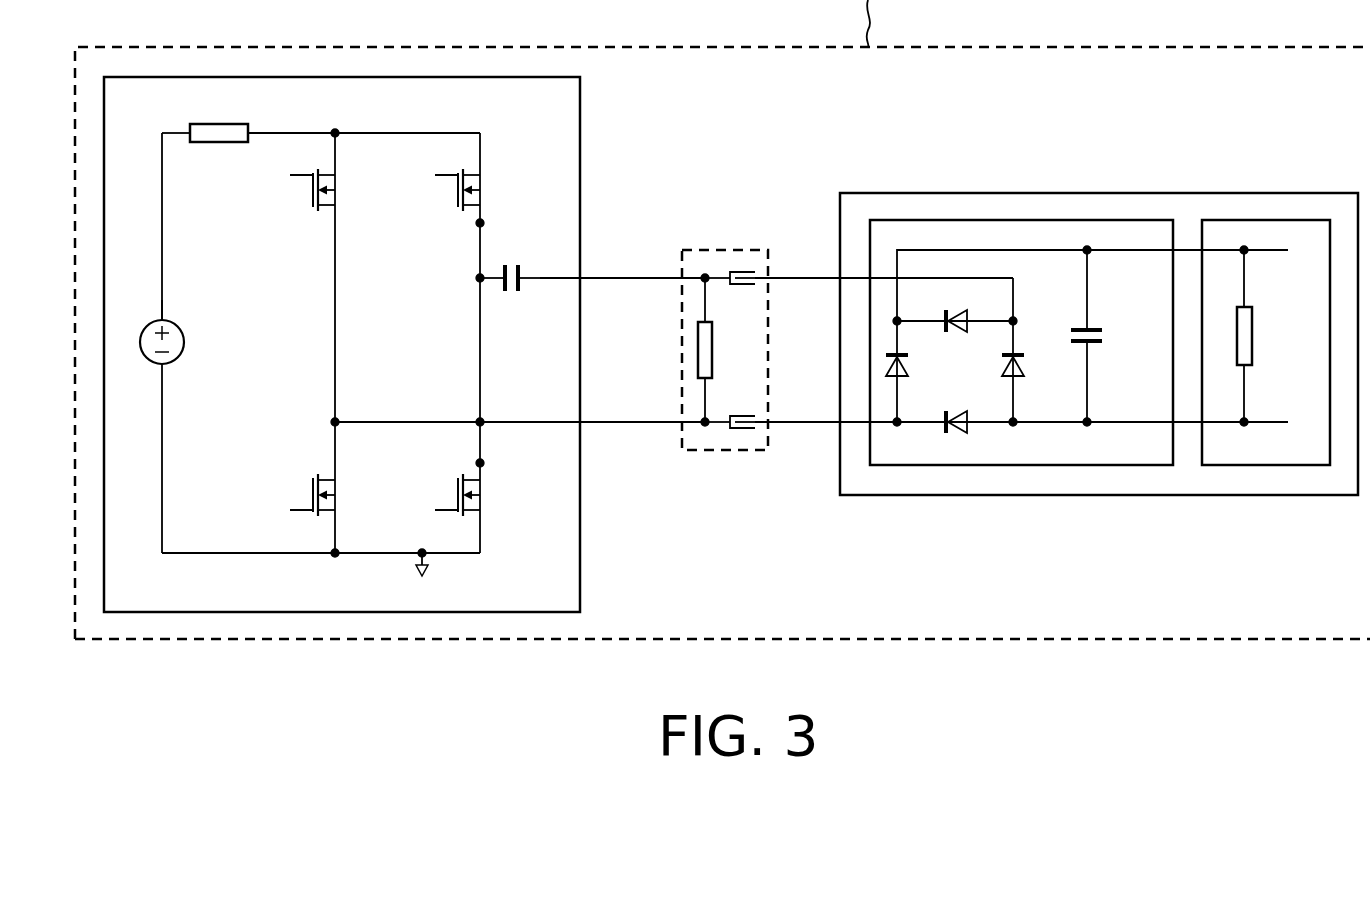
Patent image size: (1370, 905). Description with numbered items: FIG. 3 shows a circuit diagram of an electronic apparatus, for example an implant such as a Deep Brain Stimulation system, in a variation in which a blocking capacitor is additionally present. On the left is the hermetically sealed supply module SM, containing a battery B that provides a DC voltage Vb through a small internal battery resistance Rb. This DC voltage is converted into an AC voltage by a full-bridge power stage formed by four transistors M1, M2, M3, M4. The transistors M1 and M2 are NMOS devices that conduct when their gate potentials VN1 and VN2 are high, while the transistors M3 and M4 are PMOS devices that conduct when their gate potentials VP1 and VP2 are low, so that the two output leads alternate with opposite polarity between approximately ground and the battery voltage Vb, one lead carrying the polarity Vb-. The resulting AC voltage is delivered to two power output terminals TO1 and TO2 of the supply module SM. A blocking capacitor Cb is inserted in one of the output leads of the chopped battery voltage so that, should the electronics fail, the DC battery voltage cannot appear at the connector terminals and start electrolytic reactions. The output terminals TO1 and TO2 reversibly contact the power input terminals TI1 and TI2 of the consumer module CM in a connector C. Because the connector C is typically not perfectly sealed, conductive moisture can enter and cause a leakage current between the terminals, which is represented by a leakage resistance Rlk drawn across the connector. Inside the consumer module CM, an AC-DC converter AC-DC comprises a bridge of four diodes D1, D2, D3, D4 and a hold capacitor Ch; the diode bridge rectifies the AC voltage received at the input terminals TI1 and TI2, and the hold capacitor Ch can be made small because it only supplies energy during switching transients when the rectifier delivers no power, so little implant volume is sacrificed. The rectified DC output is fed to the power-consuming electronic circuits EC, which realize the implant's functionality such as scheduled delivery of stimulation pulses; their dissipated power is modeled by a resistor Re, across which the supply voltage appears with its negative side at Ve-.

The supply module SM is at (580, 158).
The internal battery resistance Rb is at (207, 143).
The battery B is at (150, 342).
The DC battery voltage Vb is at (180, 306).
The NMOS transistor M1 is at (334, 495).
The NMOS transistor M2 is at (478, 495).
The PMOS transistor M3 is at (334, 190).
The PMOS transistor M4 is at (479, 190).
The gate control voltage VP1 is at (279, 176).
The gate control voltage VP2 is at (425, 176).
The gate control voltage VN1 is at (278, 510).
The gate control voltage VN2 is at (423, 511).
The blocking capacitor Cb is at (512, 291).
The negative output polarity Vb- is at (508, 407).
The power output terminal TO1 is at (642, 265).
The power output terminal TO2 is at (642, 407).
The connector C is at (722, 452).
The leakage resistance Rlk is at (698, 347).
The power input terminal TI1 is at (884, 263).
The power input terminal TI2 is at (826, 407).
The consumer module CM is at (1057, 497).
The AC-DC converter AC-DC is at (970, 220).
The diode D1 is at (955, 311).
The diode D2 is at (975, 431).
The diode D3 is at (1031, 379).
The diode D4 is at (914, 379).
The hold capacitor Ch is at (1102, 336).
The electronic circuits EC is at (1245, 220).
The resistor Re is at (1253, 336).
The negative supply voltage terminal Ve- is at (1272, 407).